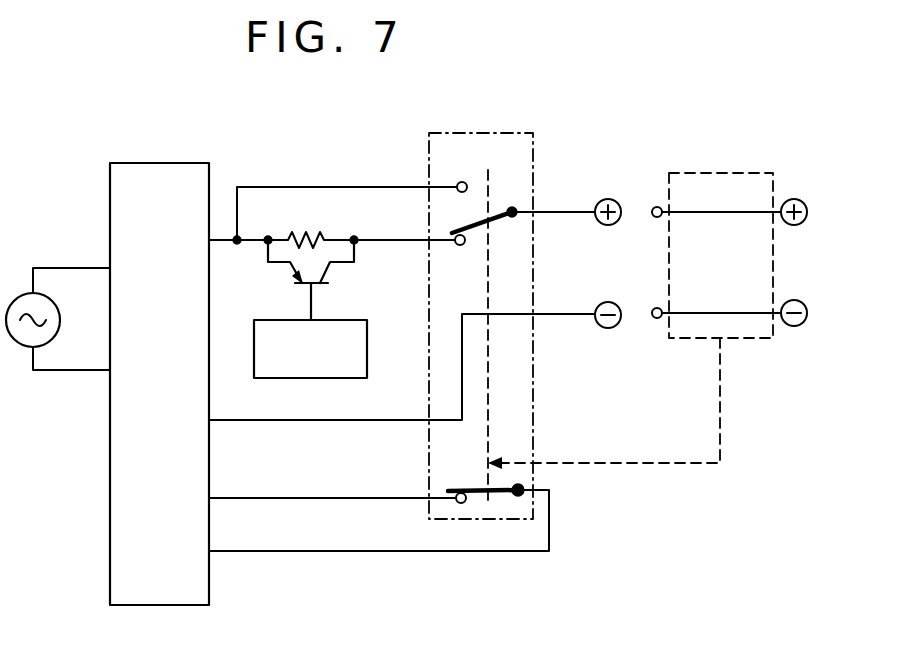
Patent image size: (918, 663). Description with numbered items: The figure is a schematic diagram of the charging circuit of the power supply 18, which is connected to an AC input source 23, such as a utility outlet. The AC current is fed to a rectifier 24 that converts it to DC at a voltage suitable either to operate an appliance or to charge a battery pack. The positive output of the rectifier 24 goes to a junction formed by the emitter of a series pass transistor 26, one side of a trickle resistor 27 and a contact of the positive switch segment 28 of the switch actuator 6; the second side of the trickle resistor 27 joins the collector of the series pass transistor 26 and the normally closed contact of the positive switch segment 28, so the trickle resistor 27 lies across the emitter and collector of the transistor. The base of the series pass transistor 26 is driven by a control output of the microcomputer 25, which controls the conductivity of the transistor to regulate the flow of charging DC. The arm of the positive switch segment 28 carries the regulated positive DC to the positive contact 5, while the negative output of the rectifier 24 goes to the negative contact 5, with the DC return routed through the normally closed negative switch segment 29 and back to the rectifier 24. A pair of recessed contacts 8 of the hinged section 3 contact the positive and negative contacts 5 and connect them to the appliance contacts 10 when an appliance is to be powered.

The power supply 18 is at (282, 154).
The rectifier 24 is at (112, 178).
The AC input source 23 is at (25, 348).
The trickle resistor 27 is at (318, 235).
The series pass transistor 26 is at (325, 286).
The microcomputer 25 is at (366, 360).
The switch actuator 6 is at (428, 158).
The positive switch segment 28 is at (495, 215).
The positive and negative contacts 5 is at (612, 198).
The hinged section 3 is at (740, 352).
The recessed contacts 8 is at (698, 212).
The appliance contacts 10 is at (795, 198).
The negative switch segment 29 is at (478, 490).